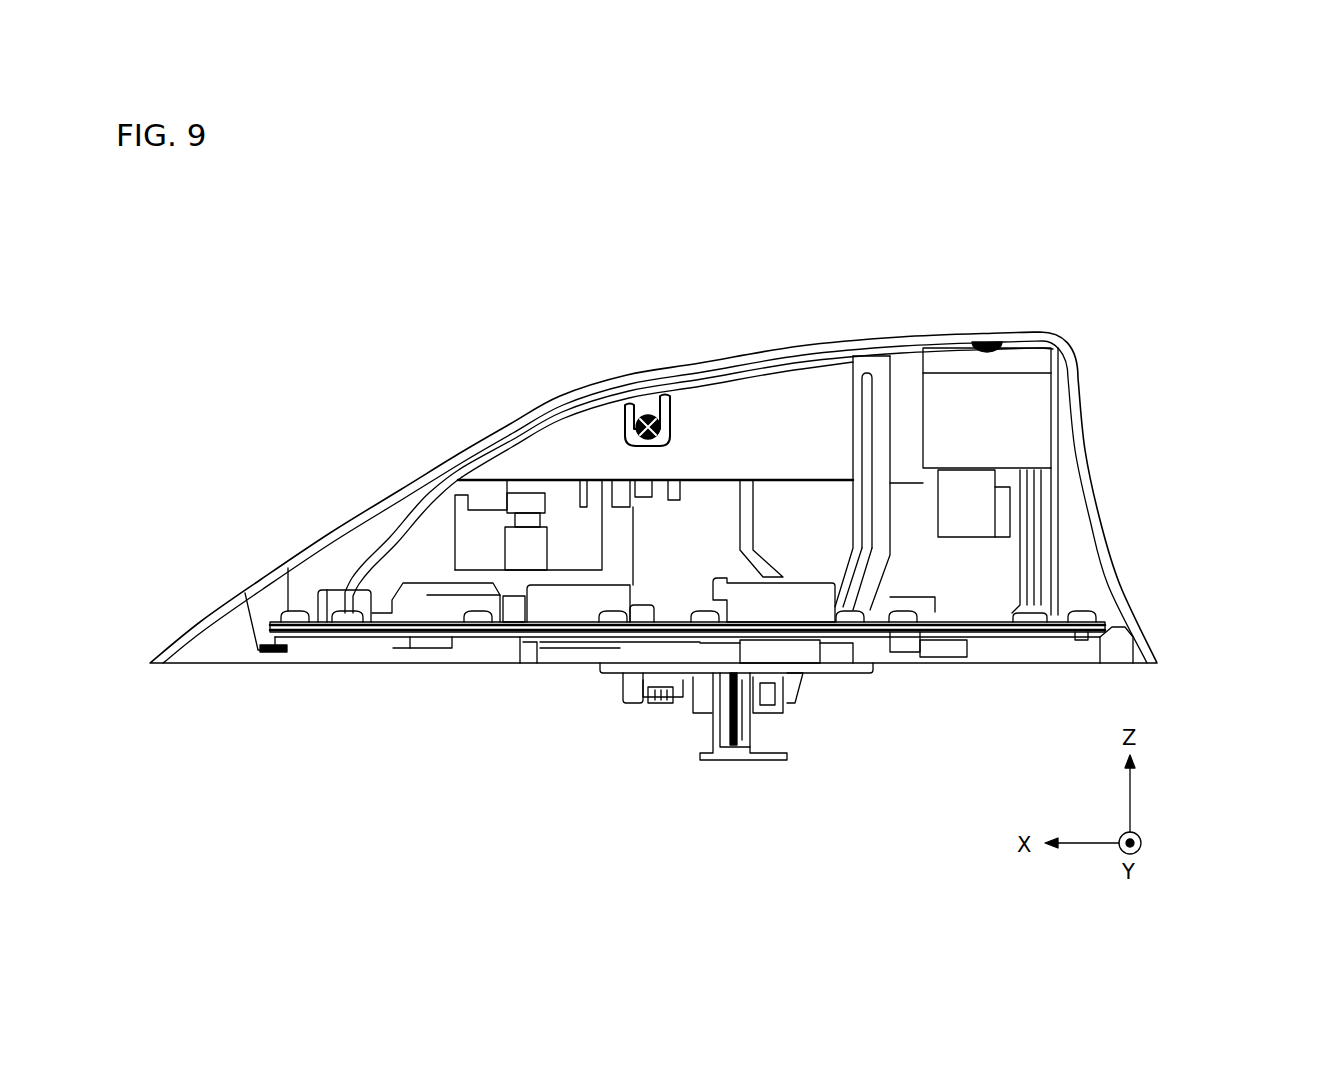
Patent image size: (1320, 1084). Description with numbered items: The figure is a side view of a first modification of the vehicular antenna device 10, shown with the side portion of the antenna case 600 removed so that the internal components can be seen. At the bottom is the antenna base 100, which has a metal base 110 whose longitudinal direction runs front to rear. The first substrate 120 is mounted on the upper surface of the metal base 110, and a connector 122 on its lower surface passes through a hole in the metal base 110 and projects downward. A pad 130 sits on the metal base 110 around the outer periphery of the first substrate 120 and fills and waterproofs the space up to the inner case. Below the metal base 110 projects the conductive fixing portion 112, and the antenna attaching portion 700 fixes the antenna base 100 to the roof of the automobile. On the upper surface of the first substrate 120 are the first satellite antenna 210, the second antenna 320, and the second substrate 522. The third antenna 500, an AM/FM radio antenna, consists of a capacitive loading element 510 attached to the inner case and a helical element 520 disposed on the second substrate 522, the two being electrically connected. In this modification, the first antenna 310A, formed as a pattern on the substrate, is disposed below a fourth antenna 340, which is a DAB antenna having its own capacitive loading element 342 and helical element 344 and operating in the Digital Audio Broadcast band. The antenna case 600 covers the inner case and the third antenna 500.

The vehicular antenna device 10 is at (197, 295).
The antenna base 100 is at (1230, 616).
The metal base 110 is at (1088, 641).
The fixing portion 112 is at (797, 713).
The first substrate 120 is at (1012, 614).
The connector 122 is at (630, 693).
The pad 130 is at (1068, 628).
The first satellite antenna 210 is at (810, 607).
The first antenna 310A is at (1028, 533).
The second antenna 320 is at (813, 497).
The fourth antenna 340 is at (1186, 362).
The capacitive loading element 342 is at (1032, 418).
The helical element 344 is at (1005, 506).
The third antenna 500 is at (743, 275).
The capacitive loading element 510 is at (708, 398).
The helical element 520 is at (487, 521).
The second substrate 522 is at (400, 545).
The antenna case 600 is at (998, 344).
The antenna attaching portion 700 is at (790, 762).